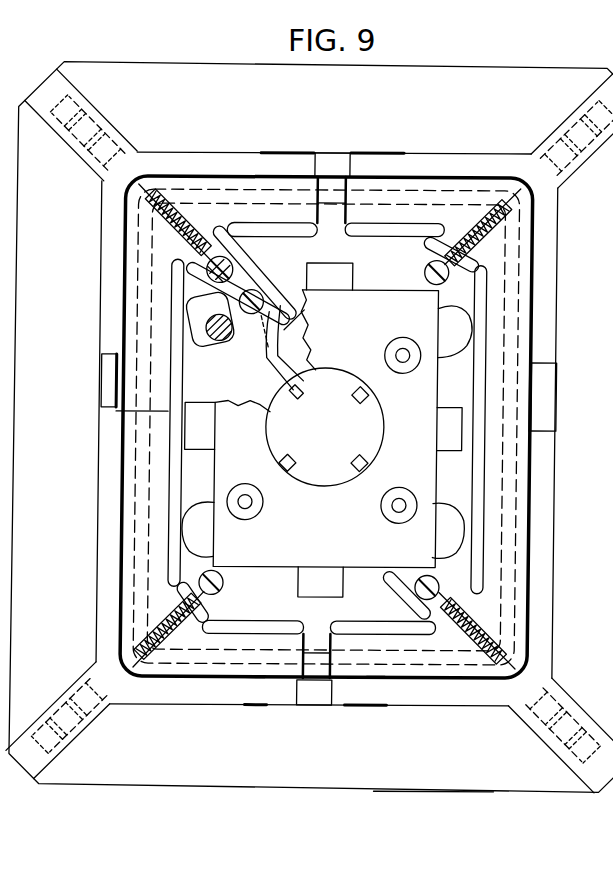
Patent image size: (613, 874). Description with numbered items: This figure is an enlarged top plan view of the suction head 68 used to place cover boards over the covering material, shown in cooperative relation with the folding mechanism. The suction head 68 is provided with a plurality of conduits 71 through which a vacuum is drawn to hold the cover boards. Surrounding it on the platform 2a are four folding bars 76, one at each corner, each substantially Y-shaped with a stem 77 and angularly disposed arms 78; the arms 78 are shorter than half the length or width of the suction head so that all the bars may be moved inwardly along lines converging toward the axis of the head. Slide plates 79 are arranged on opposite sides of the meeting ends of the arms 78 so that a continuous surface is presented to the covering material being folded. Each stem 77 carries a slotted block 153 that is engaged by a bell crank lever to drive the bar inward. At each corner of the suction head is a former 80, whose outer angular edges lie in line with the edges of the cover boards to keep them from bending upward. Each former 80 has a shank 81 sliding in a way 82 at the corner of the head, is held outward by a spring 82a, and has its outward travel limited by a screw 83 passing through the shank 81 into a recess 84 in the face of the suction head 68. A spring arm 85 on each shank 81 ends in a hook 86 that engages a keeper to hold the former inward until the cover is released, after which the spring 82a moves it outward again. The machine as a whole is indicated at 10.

The web handling machine 10 is at (32, 66).
The slotted block 153 is at (88, 120).
The stem 77 is at (110, 140).
The spring 82a is at (166, 202).
The former 80 is at (210, 182).
The shank 81 is at (232, 250).
The screw 83 is at (235, 273).
The recess 84 is at (240, 282).
The spring arm 85 is at (265, 352).
The hook 86 is at (290, 396).
The conduit 71 is at (221, 343).
The arm 78 is at (110, 262).
The suction head 68 is at (459, 472).
The way 82 is at (230, 597).
The folding bar 76 is at (210, 695).
The slide plate 79 is at (351, 707).
The platform 2a is at (434, 785).